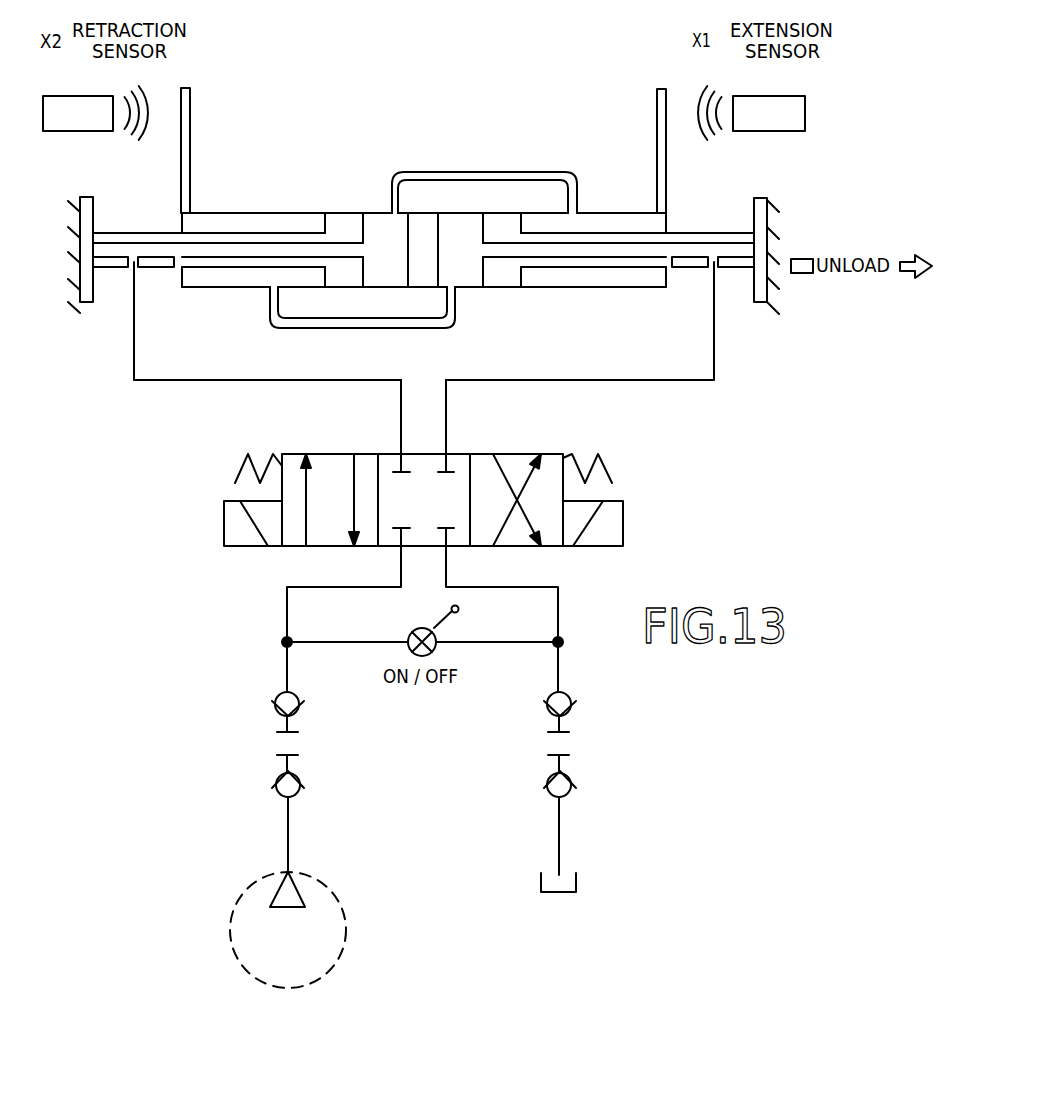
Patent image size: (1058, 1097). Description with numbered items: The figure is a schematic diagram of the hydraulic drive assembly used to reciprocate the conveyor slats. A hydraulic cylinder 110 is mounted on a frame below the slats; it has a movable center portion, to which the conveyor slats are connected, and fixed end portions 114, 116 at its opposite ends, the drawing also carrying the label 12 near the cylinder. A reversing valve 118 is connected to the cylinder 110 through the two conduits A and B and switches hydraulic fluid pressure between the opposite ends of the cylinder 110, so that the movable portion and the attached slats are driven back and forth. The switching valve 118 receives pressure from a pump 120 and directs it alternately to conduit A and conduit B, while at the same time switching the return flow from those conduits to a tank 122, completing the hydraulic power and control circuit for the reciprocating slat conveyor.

The piston rod 12 is at (252, 213).
The hydraulic cylinder 110 is at (325, 197).
The fixed end portion 114 is at (113, 268).
The fixed end portion 116 is at (735, 268).
The reversing valve 118 is at (298, 563).
The pump 120 is at (327, 948).
The tank 122 is at (565, 877).